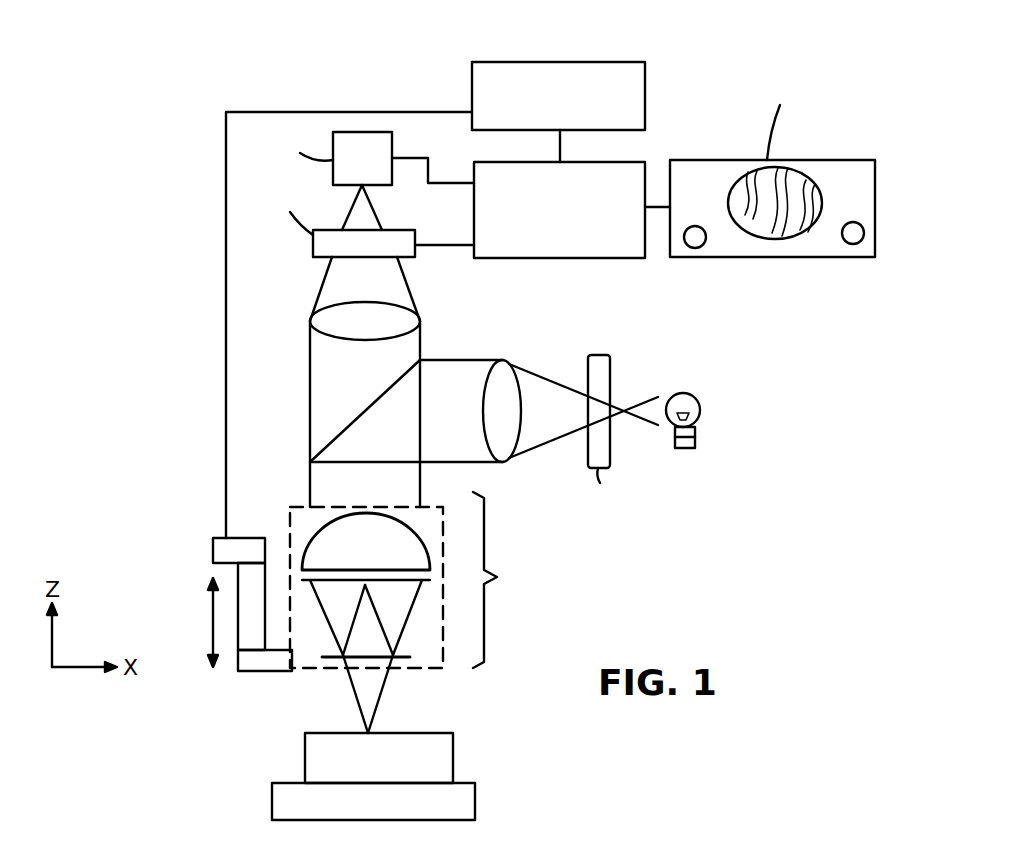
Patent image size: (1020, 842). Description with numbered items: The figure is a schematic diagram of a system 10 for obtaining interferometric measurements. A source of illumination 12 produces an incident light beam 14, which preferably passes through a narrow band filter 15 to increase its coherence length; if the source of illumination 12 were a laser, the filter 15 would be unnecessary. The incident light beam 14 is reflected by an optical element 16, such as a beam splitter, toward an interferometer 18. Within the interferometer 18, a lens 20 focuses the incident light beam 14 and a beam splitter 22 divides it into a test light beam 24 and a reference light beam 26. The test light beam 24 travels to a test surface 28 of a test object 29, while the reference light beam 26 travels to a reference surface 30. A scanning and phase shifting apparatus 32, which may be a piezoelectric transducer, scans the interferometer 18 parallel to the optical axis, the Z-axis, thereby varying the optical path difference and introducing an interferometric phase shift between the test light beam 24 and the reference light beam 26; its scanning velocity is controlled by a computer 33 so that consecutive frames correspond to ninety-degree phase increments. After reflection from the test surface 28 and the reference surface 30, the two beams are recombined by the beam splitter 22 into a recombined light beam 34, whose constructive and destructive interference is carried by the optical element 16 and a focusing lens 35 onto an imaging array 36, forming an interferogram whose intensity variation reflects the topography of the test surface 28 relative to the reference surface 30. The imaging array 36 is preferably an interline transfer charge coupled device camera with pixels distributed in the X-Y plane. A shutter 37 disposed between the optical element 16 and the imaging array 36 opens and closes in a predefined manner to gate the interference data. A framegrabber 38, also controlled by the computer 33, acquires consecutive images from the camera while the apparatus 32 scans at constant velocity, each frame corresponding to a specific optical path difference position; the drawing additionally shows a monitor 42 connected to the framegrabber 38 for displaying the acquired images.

The system 10 is at (207, 112).
The source of illumination 12 is at (698, 397).
The incident light beam 14 is at (462, 360).
The narrow band filter 15 is at (605, 355).
The optical element 16 is at (367, 413).
The interferometer 18 is at (415, 580).
The lens 20 is at (335, 516).
The beam splitter 22 is at (405, 660).
The test light beam 24 is at (345, 685).
The reference light beam 26 is at (357, 604).
The test surface 28 is at (437, 732).
The test object 29 is at (453, 757).
The reference surface 30 is at (420, 580).
The scanning and phase shifting apparatus 32 is at (213, 538).
The computer 33 is at (598, 60).
The recombined light beam 34 is at (310, 370).
The focusing lens 35 is at (310, 318).
The imaging array 36 is at (393, 137).
The shutter 37 is at (396, 230).
The framegrabber 38 is at (633, 160).
The monitor 42 is at (857, 160).